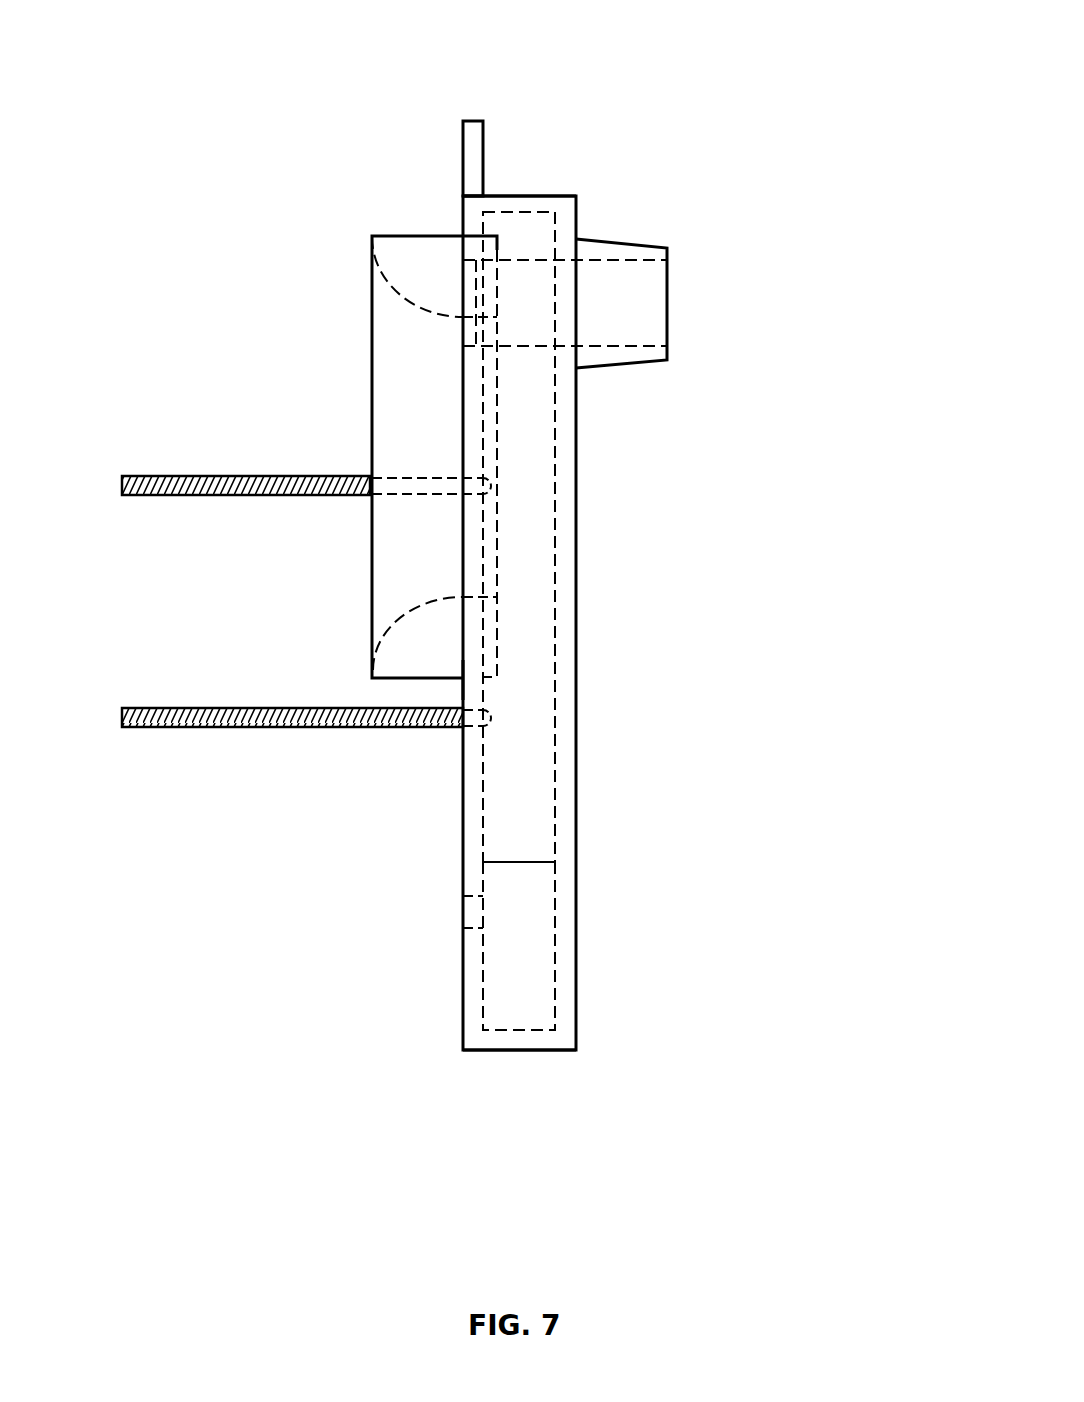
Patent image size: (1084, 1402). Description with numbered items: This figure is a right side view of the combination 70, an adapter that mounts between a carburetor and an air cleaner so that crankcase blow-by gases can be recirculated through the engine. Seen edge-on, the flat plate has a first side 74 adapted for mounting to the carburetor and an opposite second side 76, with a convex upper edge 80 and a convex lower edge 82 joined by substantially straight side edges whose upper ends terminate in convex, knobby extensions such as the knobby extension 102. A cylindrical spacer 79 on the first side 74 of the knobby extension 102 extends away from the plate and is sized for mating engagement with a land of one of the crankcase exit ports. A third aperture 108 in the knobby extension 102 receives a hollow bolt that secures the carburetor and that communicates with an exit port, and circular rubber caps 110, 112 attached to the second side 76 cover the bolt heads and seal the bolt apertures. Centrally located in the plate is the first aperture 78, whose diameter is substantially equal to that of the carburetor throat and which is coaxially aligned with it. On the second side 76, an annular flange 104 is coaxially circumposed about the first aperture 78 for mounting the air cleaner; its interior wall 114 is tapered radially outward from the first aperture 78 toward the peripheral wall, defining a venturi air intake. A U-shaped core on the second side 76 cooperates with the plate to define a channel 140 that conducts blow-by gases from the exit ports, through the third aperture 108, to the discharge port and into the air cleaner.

The combination 70 is at (668, 66).
The first side 74 is at (483, 587).
The second side 76 is at (463, 688).
The first aperture 78 is at (472, 538).
The cylindrical spacer 79 is at (636, 254).
The convex upper edge 80 is at (473, 118).
The convex lower edge 82 is at (526, 1050).
The knobby extension 102 is at (513, 193).
The annular flange 104 is at (400, 373).
The third aperture 108 is at (537, 256).
The circular rubber cap 110 is at (145, 495).
The circular rubber cap 112 is at (412, 235).
The interior wall 114 is at (392, 280).
The channel 140 is at (527, 288).